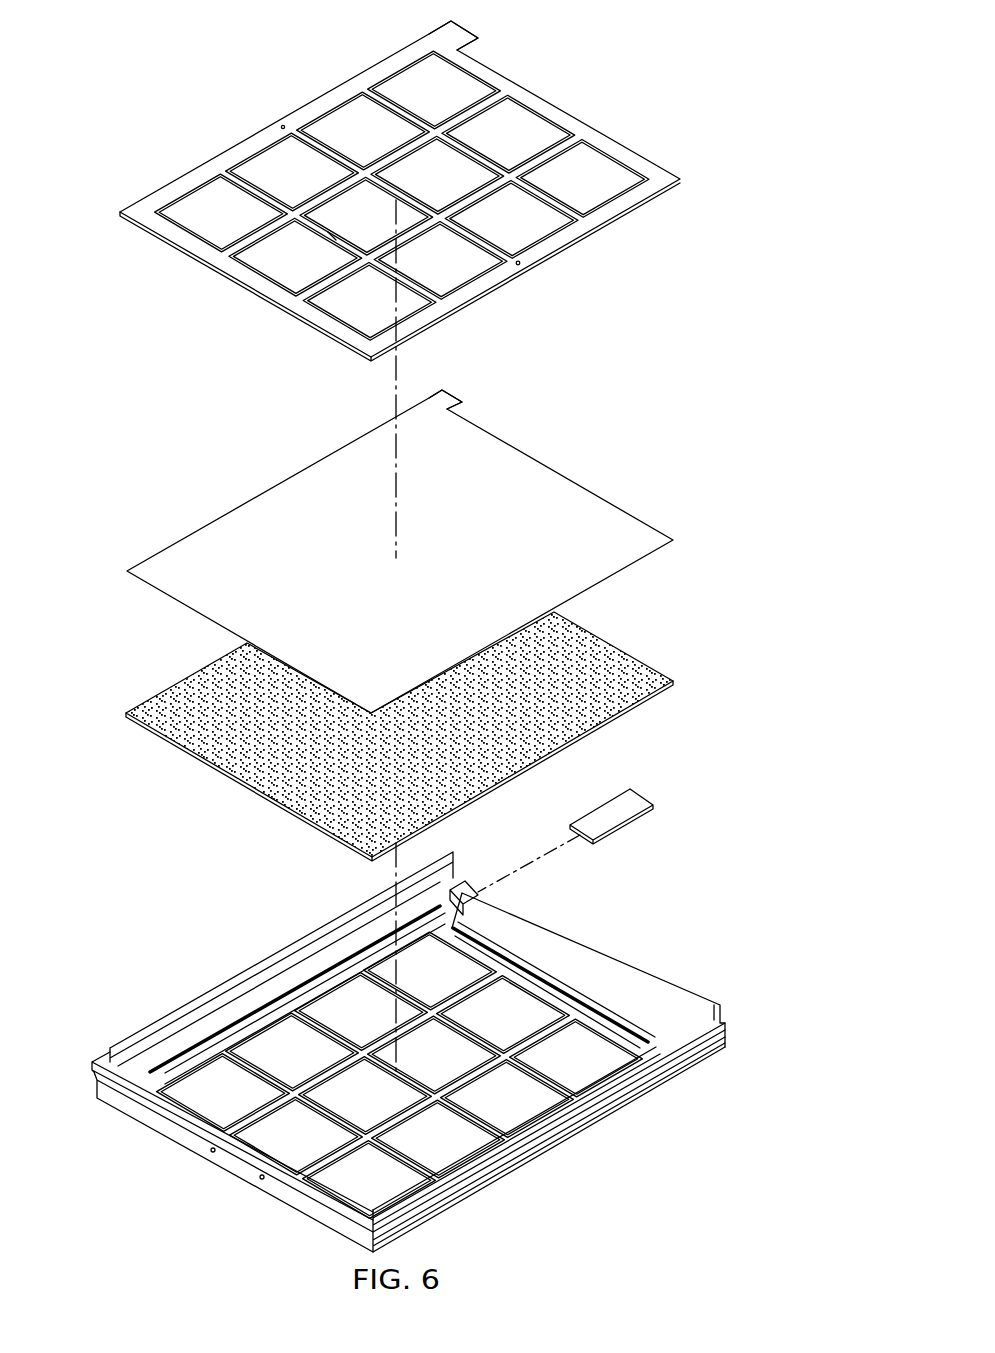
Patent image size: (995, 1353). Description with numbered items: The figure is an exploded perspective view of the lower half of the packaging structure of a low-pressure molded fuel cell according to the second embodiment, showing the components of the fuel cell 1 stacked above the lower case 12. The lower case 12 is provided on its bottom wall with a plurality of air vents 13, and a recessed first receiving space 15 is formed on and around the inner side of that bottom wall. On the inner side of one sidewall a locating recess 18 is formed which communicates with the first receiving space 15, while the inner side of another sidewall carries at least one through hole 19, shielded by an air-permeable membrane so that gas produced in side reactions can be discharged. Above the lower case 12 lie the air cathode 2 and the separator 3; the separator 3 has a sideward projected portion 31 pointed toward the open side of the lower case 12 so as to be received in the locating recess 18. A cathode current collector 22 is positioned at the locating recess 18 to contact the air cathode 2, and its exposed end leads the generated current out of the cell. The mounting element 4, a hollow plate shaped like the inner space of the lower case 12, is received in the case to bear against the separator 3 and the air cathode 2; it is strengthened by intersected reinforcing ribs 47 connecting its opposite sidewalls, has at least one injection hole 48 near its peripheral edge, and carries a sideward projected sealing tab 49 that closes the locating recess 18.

The tray body 1 is at (387, 1052).
The air cathode 2 is at (586, 657).
The separator 3 is at (423, 521).
The mounting element 4 is at (417, 184).
The lower case 12 is at (168, 1123).
The air vents 13 is at (508, 1096).
The first receiving space 15 is at (296, 997).
The locating recess 18 is at (474, 900).
The through hole 19 is at (262, 1179).
The cathode current collector 22 is at (621, 813).
The sideward projected portion 31 is at (451, 395).
The reinforcing ribs 47 is at (330, 237).
The injection hole 48 is at (519, 264).
The sealing tab 49 is at (461, 35).